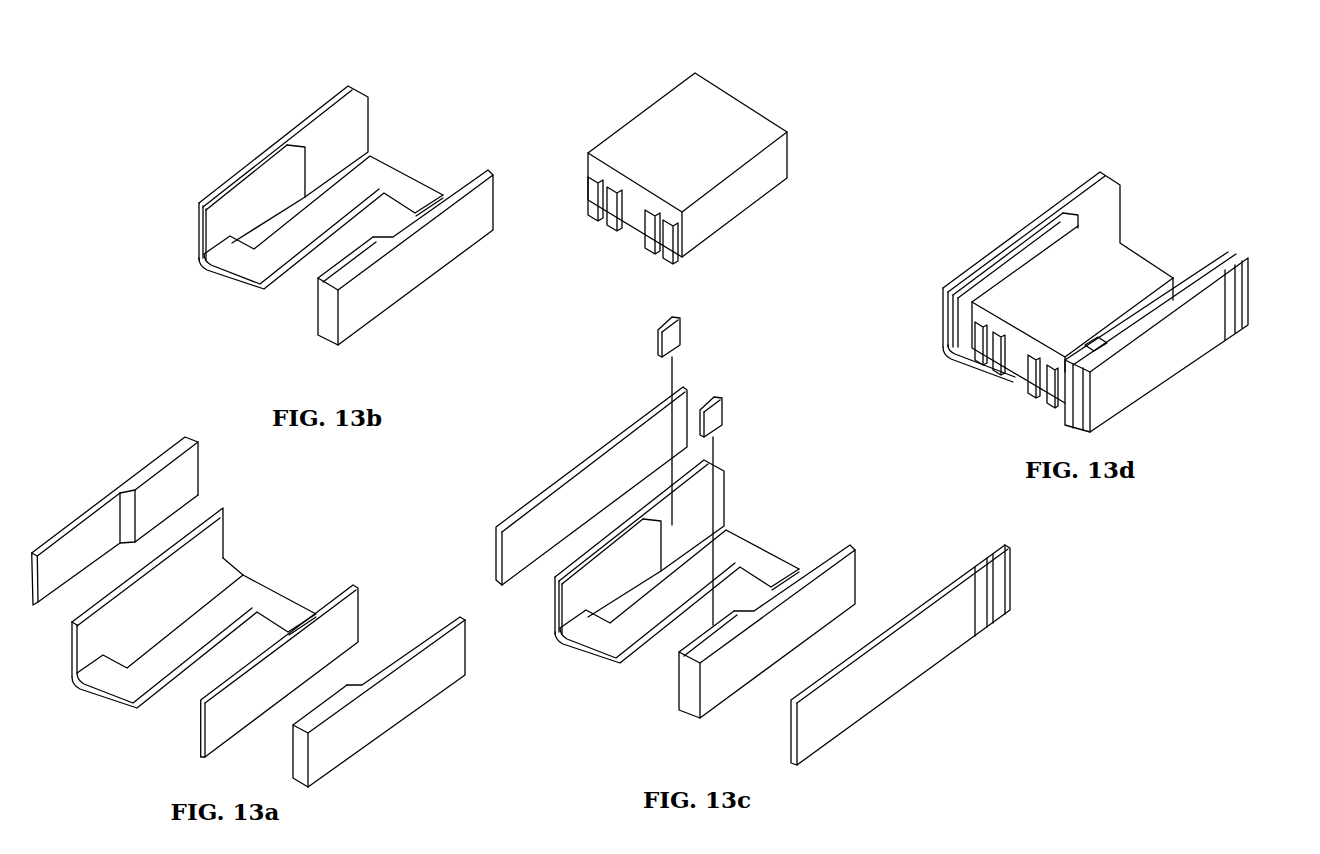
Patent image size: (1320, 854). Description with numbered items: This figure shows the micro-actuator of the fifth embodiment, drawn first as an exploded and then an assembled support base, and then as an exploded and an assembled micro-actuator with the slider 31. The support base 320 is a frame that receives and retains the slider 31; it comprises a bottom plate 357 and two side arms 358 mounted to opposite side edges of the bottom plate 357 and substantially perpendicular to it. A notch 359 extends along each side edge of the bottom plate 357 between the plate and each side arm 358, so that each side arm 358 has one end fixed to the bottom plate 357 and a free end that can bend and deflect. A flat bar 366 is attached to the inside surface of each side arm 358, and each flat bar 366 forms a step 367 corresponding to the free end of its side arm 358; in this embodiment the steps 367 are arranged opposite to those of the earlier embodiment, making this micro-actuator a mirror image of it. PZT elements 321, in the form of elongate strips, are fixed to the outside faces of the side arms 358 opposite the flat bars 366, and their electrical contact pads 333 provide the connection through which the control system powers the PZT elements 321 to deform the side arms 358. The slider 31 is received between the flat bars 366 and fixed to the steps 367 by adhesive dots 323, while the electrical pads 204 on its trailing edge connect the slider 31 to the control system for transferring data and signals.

In FIG. 13B, the slider 31 is at (652, 152).
In FIG. 13D, the slider 31 is at (1027, 269).
In FIG. 13B, the electrical pads 204 is at (588, 194).
In FIG. 13D, the electrical pads 204 is at (975, 337).
In FIG. 13A, the support base 320 is at (169, 657).
In FIG. 13B, the support base 320 is at (293, 270).
In FIG. 13C, the support base 320 is at (656, 649).
In FIG. 13D, the support base 320 is at (974, 392).
In FIG. 13C, the PZT elements 321 is at (765, 576).
In FIG. 13D, the PZT elements 321 is at (1116, 325).
In FIG. 13C, the adhesive dots 323 is at (670, 330).
In FIG. 13D, the adhesive dots 323 is at (1070, 215).
In FIG. 13C, the electrical contact pads 333 is at (1010, 570).
In FIG. 13D, the electrical contact pads 333 is at (1245, 308).
In FIG. 13A, the bottom plate 357 is at (122, 700).
In FIG. 13B, the bottom plate 357 is at (245, 272).
In FIG. 13C, the bottom plate 357 is at (613, 655).
In FIG. 13D, the bottom plate 357 is at (995, 380).
In FIG. 13A, the side arms 358 is at (222, 531).
In FIG. 13B, the side arms 358 is at (215, 192).
In FIG. 13C, the side arms 358 is at (577, 600).
In FIG. 13D, the side arms 358 is at (995, 255).
In FIG. 13A, the notch 359 is at (183, 721).
In FIG. 13B, the notch 359 is at (302, 297).
In FIG. 13C, the notch 359 is at (670, 680).
In FIG. 13D, the notch 359 is at (1062, 407).
In FIG. 13A, the flat bar 366 is at (248, 606).
In FIG. 13B, the flat bar 366 is at (346, 204).
In FIG. 13C, the flat bar 366 is at (669, 593).
In FIG. 13D, the flat bar 366 is at (1103, 270).
In FIG. 13A, the step 367 is at (155, 470).
In FIG. 13B, the step 367 is at (330, 120).
In FIG. 13C, the step 367 is at (720, 473).
In FIG. 13D, the step 367 is at (1090, 195).